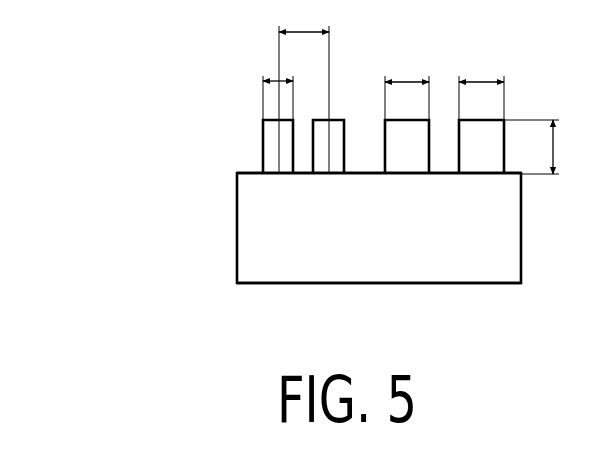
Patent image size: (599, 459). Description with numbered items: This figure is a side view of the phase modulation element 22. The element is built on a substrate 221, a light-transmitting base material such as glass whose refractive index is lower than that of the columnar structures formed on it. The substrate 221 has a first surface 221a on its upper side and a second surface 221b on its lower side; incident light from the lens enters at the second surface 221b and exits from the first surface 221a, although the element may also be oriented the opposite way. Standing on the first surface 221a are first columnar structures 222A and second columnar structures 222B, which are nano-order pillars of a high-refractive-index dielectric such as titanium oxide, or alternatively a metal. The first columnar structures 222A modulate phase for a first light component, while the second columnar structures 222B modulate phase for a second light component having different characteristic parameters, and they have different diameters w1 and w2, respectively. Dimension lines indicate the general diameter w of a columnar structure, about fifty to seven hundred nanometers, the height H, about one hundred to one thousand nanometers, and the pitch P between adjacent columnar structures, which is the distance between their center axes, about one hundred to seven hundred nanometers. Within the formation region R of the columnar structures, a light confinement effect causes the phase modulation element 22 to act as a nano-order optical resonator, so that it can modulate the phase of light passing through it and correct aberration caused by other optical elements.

The phase modulation element 22 is at (321, 86).
The substrate 221 is at (377, 272).
The first surface 221a is at (249, 172).
The second surface 221b is at (258, 285).
The first columnar structure 222A is at (272, 137).
The second columnar structure 222B is at (420, 132).
The formation region R is at (251, 103).
The pitch P is at (304, 86).
The diameter of first columnar structure w1 is at (272, 87).
The diameter of second columnar structure w2 is at (407, 87).
The diameter of columnar structure w is at (481, 87).
The height of columnar structure H is at (541, 147).